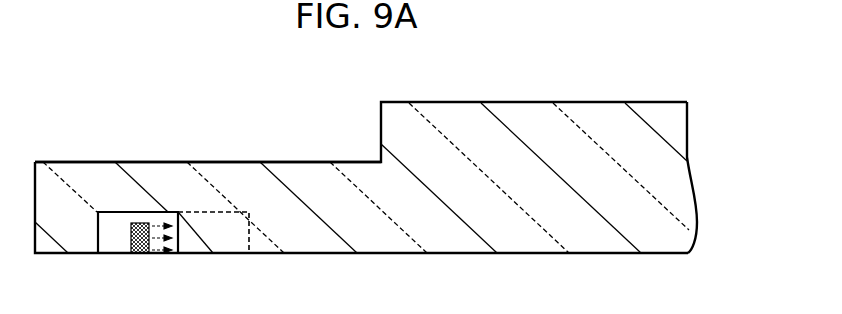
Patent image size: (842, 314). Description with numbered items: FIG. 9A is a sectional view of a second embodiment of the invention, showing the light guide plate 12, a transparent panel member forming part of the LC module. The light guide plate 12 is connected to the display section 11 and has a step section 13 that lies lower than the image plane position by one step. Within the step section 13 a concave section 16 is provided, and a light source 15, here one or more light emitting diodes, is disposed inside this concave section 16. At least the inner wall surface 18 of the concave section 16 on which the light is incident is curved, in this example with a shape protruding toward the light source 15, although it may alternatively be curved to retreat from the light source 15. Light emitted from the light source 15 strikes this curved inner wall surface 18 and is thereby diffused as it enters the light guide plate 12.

The display section 11 is at (509, 103).
The light guide plate 12 is at (672, 131).
The step section 13 is at (287, 161).
The light source 15 is at (128, 237).
The concave section 16 is at (145, 216).
The inner wall surface 18 is at (220, 224).